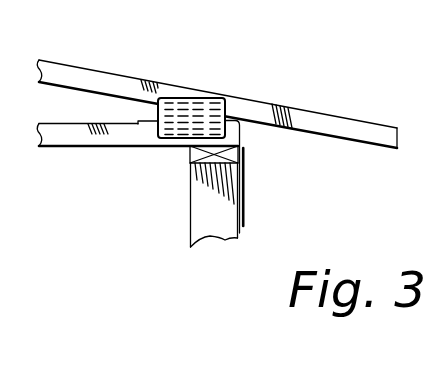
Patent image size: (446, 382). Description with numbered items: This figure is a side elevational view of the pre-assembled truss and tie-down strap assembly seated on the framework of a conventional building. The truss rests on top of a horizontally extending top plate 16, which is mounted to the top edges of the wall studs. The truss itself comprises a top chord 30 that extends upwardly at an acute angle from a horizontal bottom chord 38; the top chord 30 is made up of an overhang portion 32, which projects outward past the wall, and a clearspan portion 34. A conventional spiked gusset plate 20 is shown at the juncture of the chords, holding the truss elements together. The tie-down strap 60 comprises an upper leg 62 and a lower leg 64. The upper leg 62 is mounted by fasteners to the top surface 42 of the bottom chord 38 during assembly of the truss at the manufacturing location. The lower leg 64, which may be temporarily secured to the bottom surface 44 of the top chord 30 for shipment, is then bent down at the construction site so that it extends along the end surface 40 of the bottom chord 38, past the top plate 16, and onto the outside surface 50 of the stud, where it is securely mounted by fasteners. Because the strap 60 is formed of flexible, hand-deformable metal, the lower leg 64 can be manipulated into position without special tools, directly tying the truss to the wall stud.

The top plate 16 is at (190, 158).
The spiked gusset plate 20 is at (206, 96).
The top chord 30 is at (148, 78).
The overhang portion 32 is at (333, 114).
The clearspan portion 34 is at (97, 70).
The bottom chord 38 is at (78, 141).
The end surface of the chord 40 is at (236, 120).
The top surface of the bottom chord 42 is at (128, 122).
The bottom surface of the top chord 44 is at (89, 92).
The outside surface of the stud 50 is at (247, 231).
The tie-down strap 60 is at (241, 153).
The upper leg 62 is at (146, 124).
The lower leg 64 is at (246, 189).